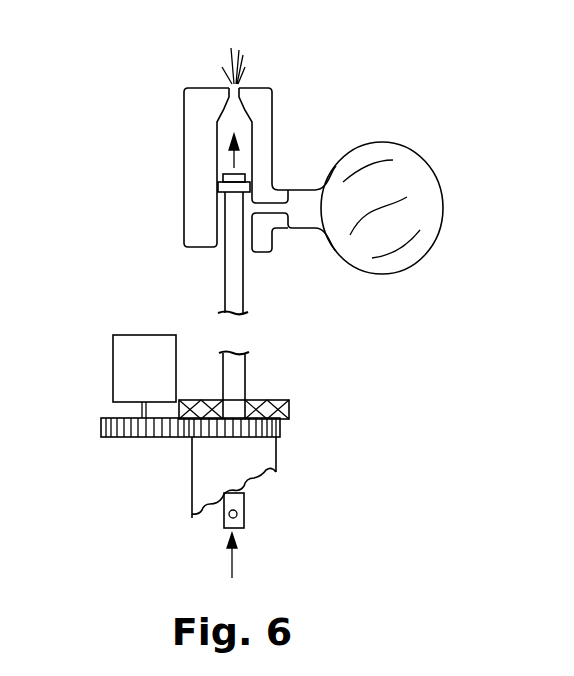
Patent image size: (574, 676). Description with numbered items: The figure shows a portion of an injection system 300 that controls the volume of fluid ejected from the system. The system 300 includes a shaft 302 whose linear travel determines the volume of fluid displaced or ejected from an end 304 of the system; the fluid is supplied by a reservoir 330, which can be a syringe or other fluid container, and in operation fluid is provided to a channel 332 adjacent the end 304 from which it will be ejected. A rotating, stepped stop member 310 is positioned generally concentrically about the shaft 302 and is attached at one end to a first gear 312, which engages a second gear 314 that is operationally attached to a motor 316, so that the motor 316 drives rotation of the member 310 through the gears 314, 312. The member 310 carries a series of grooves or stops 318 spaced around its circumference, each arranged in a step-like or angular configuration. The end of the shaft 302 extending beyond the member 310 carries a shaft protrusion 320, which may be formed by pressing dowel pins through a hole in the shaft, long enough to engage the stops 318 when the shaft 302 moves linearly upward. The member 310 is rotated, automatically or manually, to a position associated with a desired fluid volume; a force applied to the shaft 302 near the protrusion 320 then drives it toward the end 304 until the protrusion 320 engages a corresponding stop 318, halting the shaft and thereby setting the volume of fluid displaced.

The injection system 300 is at (334, 83).
The shaft 302 is at (238, 278).
The end 304 is at (252, 80).
The rotating stepped stop member 310 is at (227, 458).
The first gear 312 is at (258, 417).
The second gear 314 is at (149, 438).
The motor 316 is at (125, 370).
The grooves or stops 318 is at (268, 478).
The shaft protrusion 320 is at (242, 513).
The reservoir 330 is at (403, 170).
The channel 332 is at (244, 123).